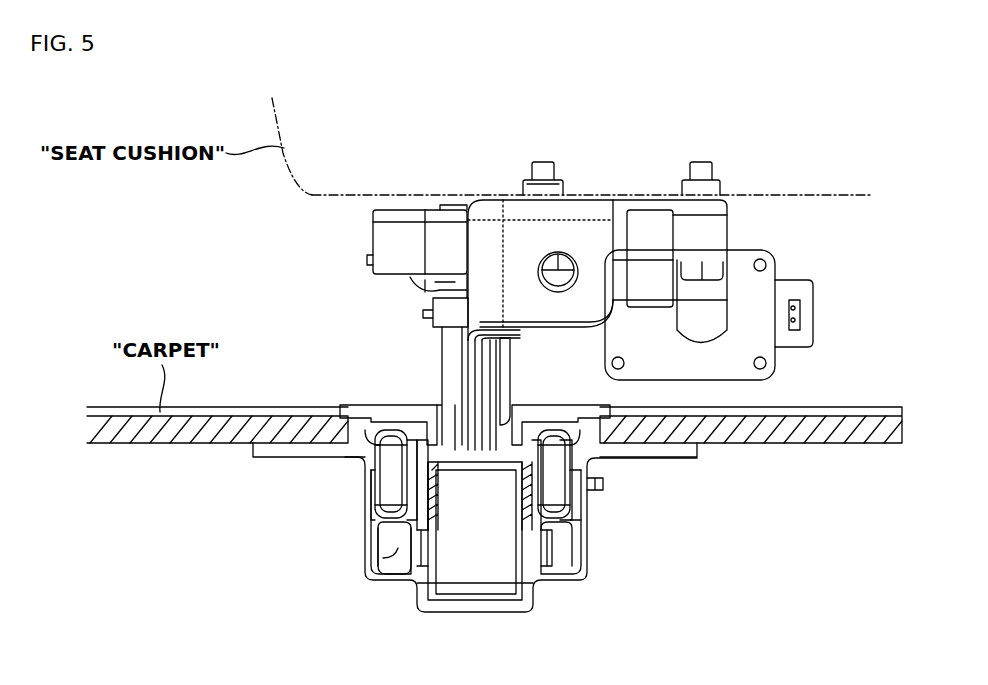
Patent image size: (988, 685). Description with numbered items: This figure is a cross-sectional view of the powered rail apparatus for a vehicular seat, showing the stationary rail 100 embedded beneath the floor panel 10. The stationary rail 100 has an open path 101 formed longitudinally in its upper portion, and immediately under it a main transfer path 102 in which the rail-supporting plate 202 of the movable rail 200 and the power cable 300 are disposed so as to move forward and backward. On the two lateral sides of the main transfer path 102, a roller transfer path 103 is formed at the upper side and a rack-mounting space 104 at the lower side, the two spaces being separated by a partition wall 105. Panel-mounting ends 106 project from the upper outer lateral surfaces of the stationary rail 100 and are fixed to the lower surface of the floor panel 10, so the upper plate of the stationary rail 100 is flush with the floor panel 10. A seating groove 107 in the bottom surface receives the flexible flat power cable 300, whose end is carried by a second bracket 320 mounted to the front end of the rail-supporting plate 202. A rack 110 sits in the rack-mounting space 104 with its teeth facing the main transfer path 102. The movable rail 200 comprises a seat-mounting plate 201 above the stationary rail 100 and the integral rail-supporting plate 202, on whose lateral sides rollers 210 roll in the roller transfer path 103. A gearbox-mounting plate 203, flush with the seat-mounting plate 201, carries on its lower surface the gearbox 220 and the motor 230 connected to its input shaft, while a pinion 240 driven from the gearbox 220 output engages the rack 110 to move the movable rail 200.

The floor panel 10 is at (141, 430).
The stationary rail 100 is at (587, 552).
The open path 101 is at (440, 408).
The main transfer path 102 is at (420, 521).
The roller transfer path 103 is at (382, 483).
The rack-mounting space 104 is at (392, 570).
The partition wall 105 is at (400, 522).
The panel-mounting end 106 is at (668, 456).
The seating groove 107 is at (449, 594).
The rack 110 is at (400, 574).
The movable rail 200 is at (486, 200).
The seat-mounting plate 201 is at (503, 197).
The rail-supporting plate 202 is at (480, 386).
The gearbox-mounting plate 203 is at (638, 195).
The roller 210 is at (396, 450).
The gearbox 220 is at (707, 308).
The motor 230 is at (768, 342).
The pinion 240 is at (426, 572).
The power cable 300 is at (500, 582).
The second bracket 320 is at (540, 560).